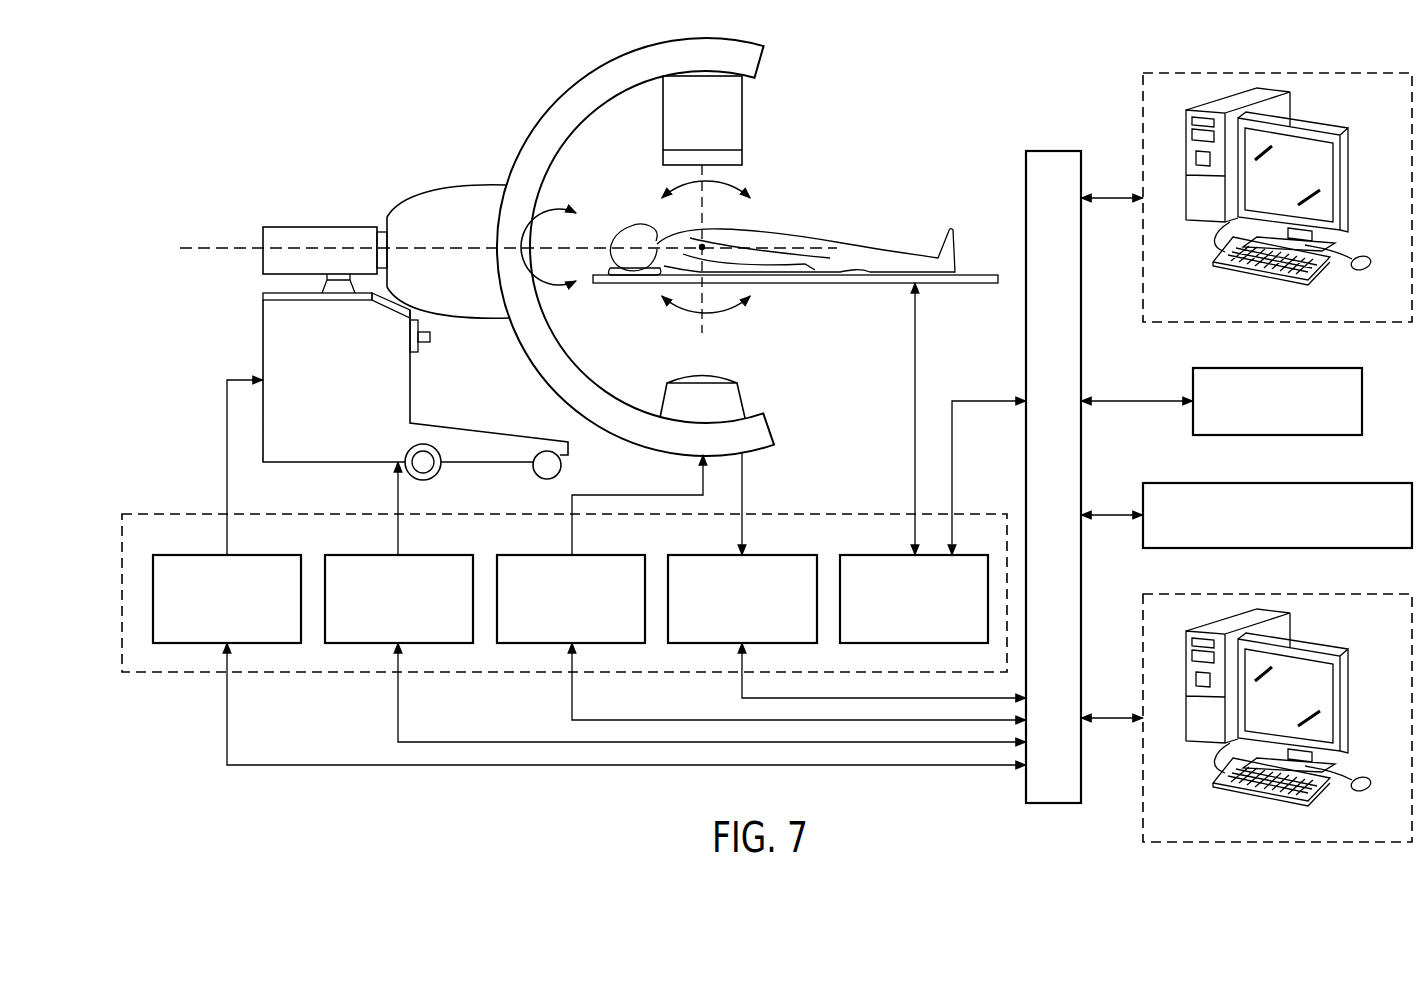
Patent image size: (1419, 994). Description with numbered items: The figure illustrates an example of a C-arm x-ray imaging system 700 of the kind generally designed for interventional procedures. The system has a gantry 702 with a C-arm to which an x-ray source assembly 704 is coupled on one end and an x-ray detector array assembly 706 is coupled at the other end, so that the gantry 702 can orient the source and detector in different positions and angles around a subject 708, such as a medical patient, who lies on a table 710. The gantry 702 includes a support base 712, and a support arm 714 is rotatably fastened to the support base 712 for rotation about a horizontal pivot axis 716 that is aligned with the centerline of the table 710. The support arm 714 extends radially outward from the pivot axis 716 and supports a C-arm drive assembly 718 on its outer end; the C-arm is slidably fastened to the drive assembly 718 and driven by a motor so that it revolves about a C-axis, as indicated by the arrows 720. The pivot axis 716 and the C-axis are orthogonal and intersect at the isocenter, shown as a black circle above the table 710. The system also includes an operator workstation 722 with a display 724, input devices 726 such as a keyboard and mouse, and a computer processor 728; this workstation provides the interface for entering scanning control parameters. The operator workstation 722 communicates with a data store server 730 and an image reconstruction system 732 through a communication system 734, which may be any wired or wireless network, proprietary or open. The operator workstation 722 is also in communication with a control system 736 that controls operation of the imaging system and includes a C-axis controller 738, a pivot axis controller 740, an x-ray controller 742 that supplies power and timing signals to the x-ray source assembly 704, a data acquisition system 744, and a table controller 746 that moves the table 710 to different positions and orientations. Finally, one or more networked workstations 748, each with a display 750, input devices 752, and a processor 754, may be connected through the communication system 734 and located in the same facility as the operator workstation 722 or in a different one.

The C-arm x-ray imaging system 700 is at (222, 93).
The gantry 702 is at (534, 122).
The x-ray source assembly 704 is at (743, 120).
The x-ray detector array assembly 706 is at (742, 393).
The subject 708 is at (789, 222).
The table 710 is at (940, 284).
The support base 712 is at (263, 336).
The support arm 714 is at (350, 227).
The pivot axis 716 is at (239, 251).
The C-arm drive assembly 718 is at (426, 190).
The arrows 720 is at (736, 186).
The operator workstation 722 is at (1348, 73).
The display 724 is at (1320, 130).
The input devices 726 is at (1216, 251).
The computer processor 728 is at (1215, 99).
The data store server 730 is at (1298, 368).
The image reconstruction system 732 is at (1348, 483).
The communication system 734 is at (1050, 151).
The control system 736 is at (803, 514).
The C-axis controller 738 is at (240, 555).
The pivot axis controller 740 is at (412, 555).
The x-ray controller 742 is at (585, 555).
The data acquisition system 744 is at (757, 555).
The table controller 746 is at (895, 555).
The networked workstation 748 is at (1348, 594).
The display 750 is at (1299, 698).
The input devices 752 is at (1263, 774).
The processor 754 is at (1227, 671).